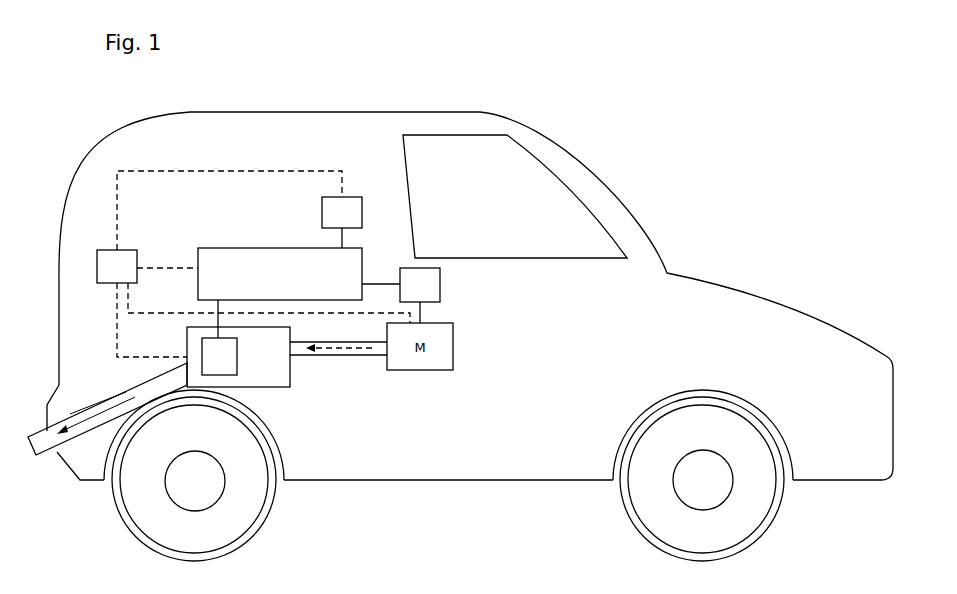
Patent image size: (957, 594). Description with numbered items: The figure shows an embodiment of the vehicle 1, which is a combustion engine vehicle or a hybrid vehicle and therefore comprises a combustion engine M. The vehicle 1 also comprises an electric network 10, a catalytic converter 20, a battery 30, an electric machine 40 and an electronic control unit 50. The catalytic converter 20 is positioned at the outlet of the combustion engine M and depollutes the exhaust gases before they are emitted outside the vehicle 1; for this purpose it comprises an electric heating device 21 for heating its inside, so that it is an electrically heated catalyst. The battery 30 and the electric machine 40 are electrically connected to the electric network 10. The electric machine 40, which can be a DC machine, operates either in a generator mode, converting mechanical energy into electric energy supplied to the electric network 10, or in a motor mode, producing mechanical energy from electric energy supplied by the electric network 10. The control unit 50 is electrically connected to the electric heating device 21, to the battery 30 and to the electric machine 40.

The vehicle 1 is at (671, 199).
The electric network 10 is at (280, 266).
The catalytic converter 20 is at (238, 357).
The electric heating device 21 is at (219, 356).
The battery 30 is at (342, 212).
The electric machine 40 is at (420, 285).
The electronic control unit 50 is at (117, 266).